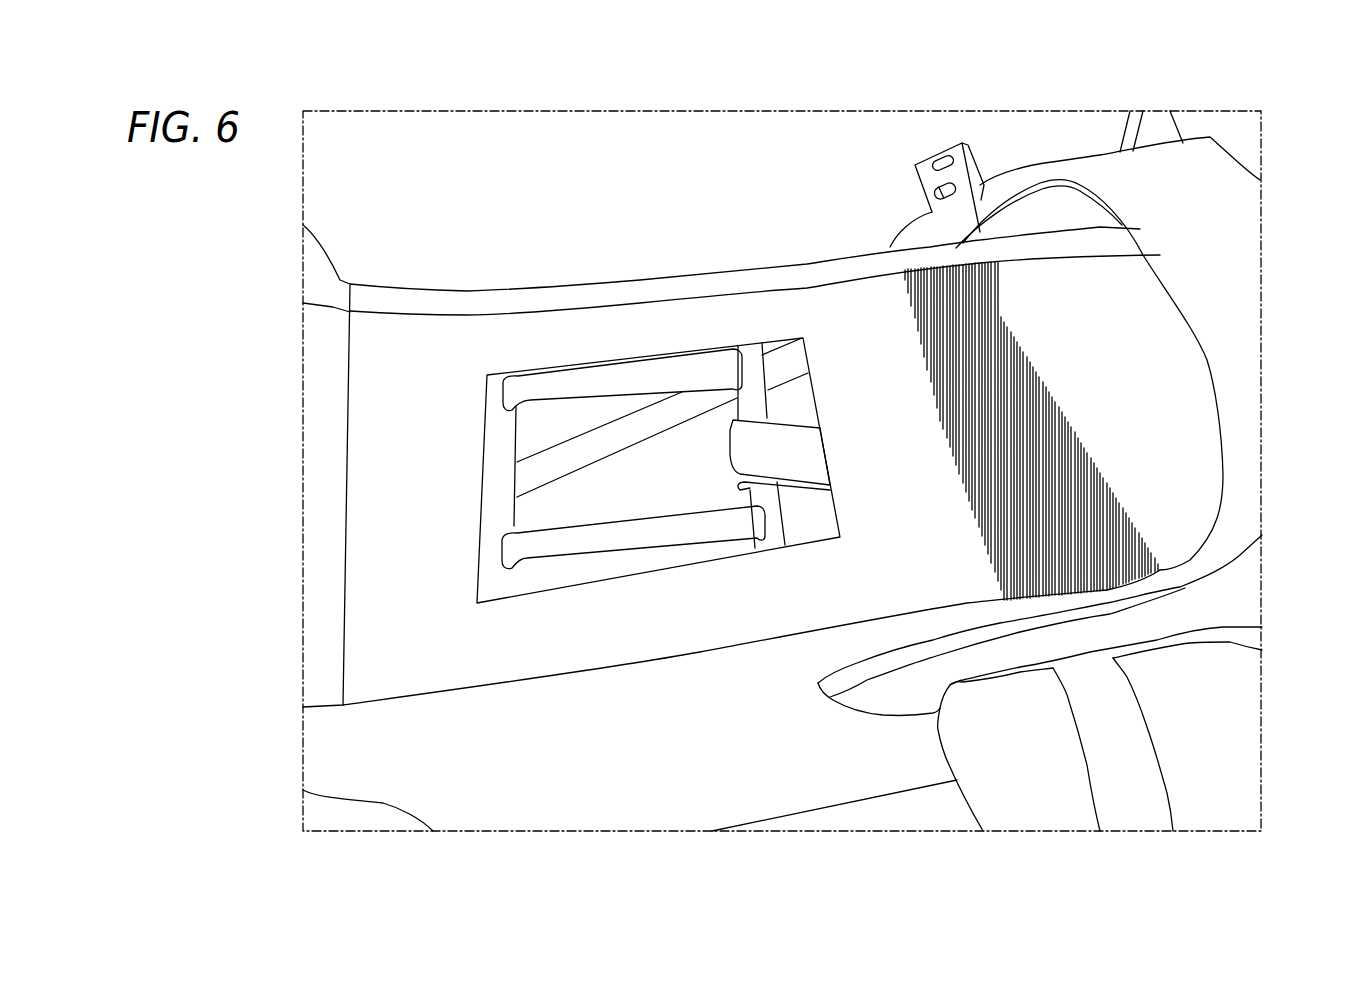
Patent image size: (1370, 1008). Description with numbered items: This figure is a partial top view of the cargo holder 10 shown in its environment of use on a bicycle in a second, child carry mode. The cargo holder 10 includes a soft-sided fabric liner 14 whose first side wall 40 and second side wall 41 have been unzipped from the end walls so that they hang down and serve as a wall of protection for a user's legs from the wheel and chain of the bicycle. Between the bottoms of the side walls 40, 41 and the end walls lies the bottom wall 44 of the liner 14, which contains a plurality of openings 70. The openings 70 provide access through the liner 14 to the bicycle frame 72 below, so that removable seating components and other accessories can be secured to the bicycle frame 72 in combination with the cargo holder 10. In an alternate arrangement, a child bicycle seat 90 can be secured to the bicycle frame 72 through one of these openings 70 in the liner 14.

The cargo holder 10 is at (241, 746).
The liner 14 is at (322, 545).
The first side wall 40 is at (783, 273).
The second side wall 41 is at (617, 753).
The bottom wall 44 is at (373, 638).
The openings 70 is at (570, 377).
The bicycle frame 72 is at (497, 480).
The child bicycle seat 90 is at (1212, 260).